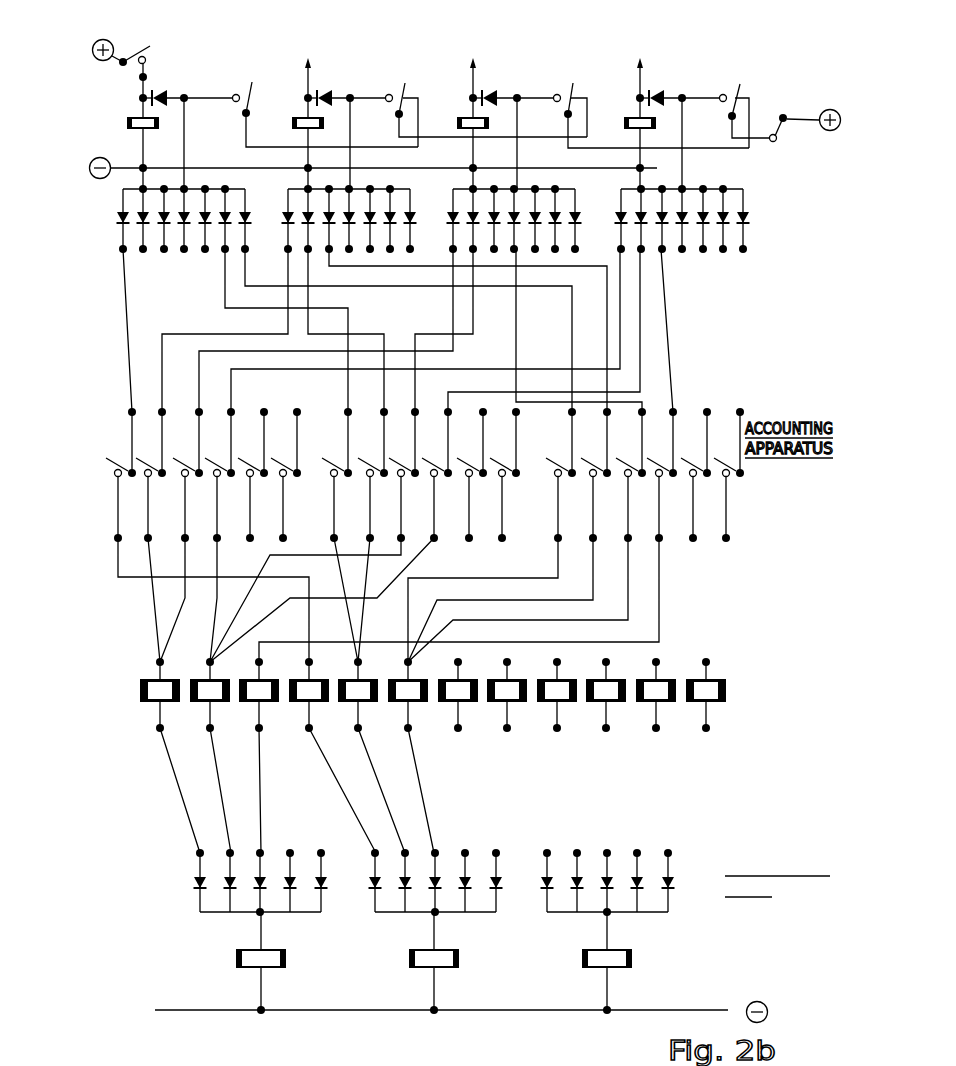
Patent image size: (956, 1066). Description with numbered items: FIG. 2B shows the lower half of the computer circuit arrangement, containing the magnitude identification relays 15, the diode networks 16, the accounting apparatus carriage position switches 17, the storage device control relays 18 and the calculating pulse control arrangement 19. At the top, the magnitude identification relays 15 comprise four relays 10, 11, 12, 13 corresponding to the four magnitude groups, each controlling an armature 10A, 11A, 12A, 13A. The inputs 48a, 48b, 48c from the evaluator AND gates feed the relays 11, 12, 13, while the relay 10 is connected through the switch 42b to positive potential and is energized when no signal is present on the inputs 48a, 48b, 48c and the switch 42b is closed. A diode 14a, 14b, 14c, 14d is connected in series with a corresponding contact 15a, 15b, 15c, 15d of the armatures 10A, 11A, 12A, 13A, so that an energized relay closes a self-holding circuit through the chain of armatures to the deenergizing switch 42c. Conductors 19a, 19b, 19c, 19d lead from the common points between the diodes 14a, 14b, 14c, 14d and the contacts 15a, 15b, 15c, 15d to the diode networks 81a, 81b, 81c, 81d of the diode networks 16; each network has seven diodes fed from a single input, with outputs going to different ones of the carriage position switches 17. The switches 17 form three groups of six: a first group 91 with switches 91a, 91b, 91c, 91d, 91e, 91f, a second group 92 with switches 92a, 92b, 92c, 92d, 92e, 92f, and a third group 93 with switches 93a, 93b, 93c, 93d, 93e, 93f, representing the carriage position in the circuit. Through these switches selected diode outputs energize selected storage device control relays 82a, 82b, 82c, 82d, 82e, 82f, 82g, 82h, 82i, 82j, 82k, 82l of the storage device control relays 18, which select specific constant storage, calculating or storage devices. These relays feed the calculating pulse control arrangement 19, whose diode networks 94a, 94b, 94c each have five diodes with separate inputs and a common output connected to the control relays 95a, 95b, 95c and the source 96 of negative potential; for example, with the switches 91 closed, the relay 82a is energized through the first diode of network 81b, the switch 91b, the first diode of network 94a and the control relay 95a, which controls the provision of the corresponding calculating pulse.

The magnitude identification relay 10 is at (128, 117).
The contact field or matrix 11 is at (303, 118).
The transfer switch 12 is at (468, 118).
The distributor 13 is at (634, 118).
The relay contact 10A is at (255, 82).
The relay contact 11A is at (409, 85).
The relay contact 12A is at (580, 84).
The relay contact 13A is at (738, 86).
The diode 14a is at (157, 91).
The diode 14b is at (328, 91).
The diode 14c is at (492, 91).
The diode 14d is at (657, 93).
The magnitude identification relays 15 is at (578, 30).
The relay contact 15a is at (242, 89).
The relay contact 15b is at (392, 91).
The relay contact 15c is at (556, 95).
The relay contact 15d is at (713, 90).
The diode networks 16 is at (92, 49).
The accounting apparatus carriage position switches 17 is at (820, 497).
The storage device control relays 18 is at (828, 109).
The calculating pulse control arrangement 19 is at (795, 942).
The conductor 19a is at (184, 168).
The conductor 19b is at (352, 168).
The conductor 19c is at (516, 168).
The conductor 19d is at (683, 170).
The switch 42b is at (134, 47).
The switch 42c is at (795, 136).
The output of AND gate 48a is at (306, 73).
The output of AND gate 48b is at (470, 74).
The output of AND gate 48c is at (636, 75).
The diode network 81a is at (268, 208).
The diode network 81b is at (440, 208).
The diode network 81c is at (603, 208).
The diode network 81d is at (775, 208).
The storage device control relay 82a is at (162, 693).
The storage device control relay 82b is at (212, 693).
The storage device control relay 82c is at (261, 693).
The storage device control relay 82d is at (311, 693).
The storage device control relay 82e is at (360, 693).
The storage device control relay 82f is at (410, 693).
The storage device control relay 82g is at (460, 693).
The storage device control relay 82h is at (509, 693).
The storage device control relay 82i is at (559, 693).
The storage device control relay 82j is at (608, 693).
The storage device control relay 82k is at (658, 693).
The storage device control relay 82l is at (708, 693).
The first group of carriage position switches 91 is at (103, 514).
The carriage position switch 91a is at (113, 486).
The carriage position switch 91b is at (148, 501).
The carriage position switch 91c is at (180, 501).
The carriage position switch 91d is at (213, 501).
The carriage position switch 91e is at (246, 501).
The carriage position switch 91f is at (278, 501).
The second group of carriage position switches 92 is at (318, 514).
The carriage position switch 92a is at (332, 501).
The carriage position switch 92b is at (366, 501).
The carriage position switch 92c is at (398, 501).
The carriage position switch 92d is at (431, 501).
The carriage position switch 92e is at (466, 501).
The carriage position switch 92f is at (498, 501).
The third group of carriage position switches 93 is at (546, 514).
The carriage position switch 93a is at (558, 501).
The carriage position switch 93b is at (588, 501).
The carriage position switch 93c is at (621, 501).
The carriage position switch 93d is at (654, 501).
The carriage position switch 93e is at (689, 501).
The carriage position switch 93f is at (720, 501).
The diode network 94a is at (184, 907).
The diode network 94b is at (364, 907).
The diode network 94c is at (531, 909).
The control relay 95a is at (236, 955).
The control relay 95b is at (409, 955).
The control relay 95c is at (582, 955).
The source of negative potential 96 is at (767, 1006).